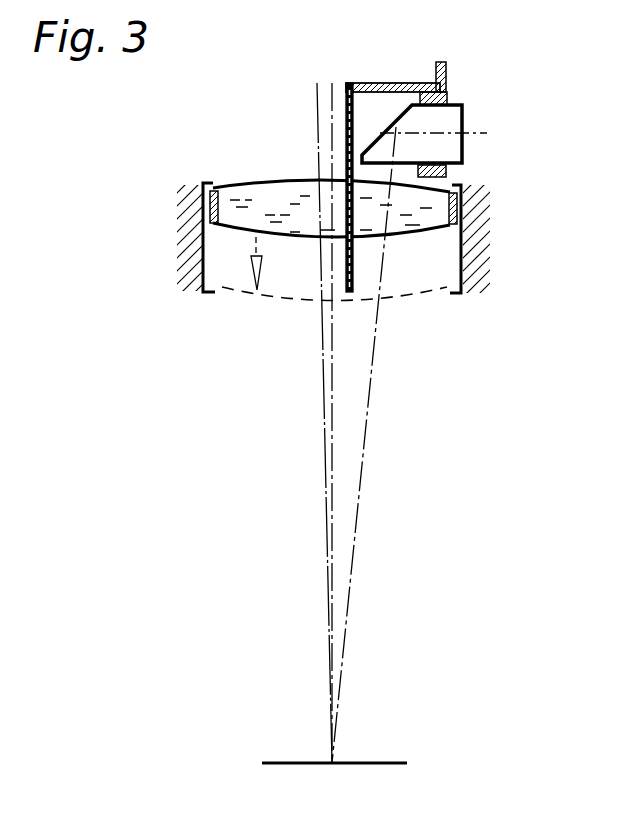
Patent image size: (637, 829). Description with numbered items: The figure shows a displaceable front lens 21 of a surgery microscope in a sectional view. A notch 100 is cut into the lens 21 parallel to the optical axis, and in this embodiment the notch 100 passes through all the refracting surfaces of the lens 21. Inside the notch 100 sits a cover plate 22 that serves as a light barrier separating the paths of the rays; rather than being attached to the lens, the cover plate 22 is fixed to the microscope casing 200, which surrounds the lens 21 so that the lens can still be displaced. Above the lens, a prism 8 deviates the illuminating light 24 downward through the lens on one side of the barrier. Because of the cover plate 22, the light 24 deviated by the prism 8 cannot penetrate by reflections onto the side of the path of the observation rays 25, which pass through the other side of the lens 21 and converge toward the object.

The prism 8 is at (453, 117).
The displaceable front lens 21 is at (258, 187).
The cover plate 22 is at (347, 83).
The light 24 is at (370, 403).
The observation rays 25 is at (318, 375).
The notch 100 is at (355, 217).
The microscope casing 200 is at (447, 73).